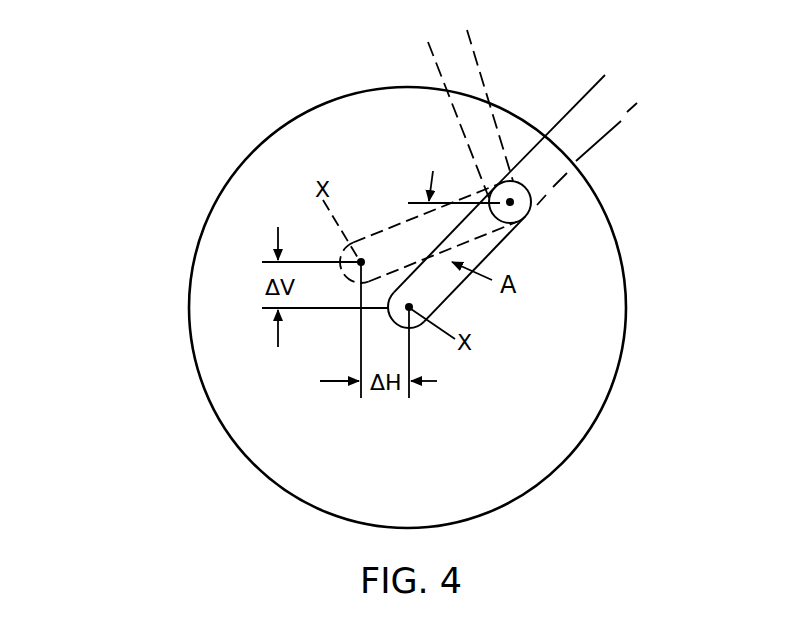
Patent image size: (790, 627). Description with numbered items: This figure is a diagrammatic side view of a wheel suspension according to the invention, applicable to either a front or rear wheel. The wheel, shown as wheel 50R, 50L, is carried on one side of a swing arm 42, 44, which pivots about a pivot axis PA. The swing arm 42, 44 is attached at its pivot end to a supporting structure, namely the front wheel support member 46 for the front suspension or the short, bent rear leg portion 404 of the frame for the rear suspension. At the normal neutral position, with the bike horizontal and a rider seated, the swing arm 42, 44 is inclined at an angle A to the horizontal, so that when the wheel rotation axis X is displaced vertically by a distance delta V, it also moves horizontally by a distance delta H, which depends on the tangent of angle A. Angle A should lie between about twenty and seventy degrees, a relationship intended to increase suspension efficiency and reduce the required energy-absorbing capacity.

The rear wheel 50R is at (352, 307).
The left brake disc / sheave 50L is at (227, 433).
The front wheel support member 46 is at (480, 64).
The rear leg portion 404 is at (608, 133).
The swing arm 42 is at (455, 262).
The swing arm 44 is at (453, 293).
The pivot axis PA is at (513, 204).